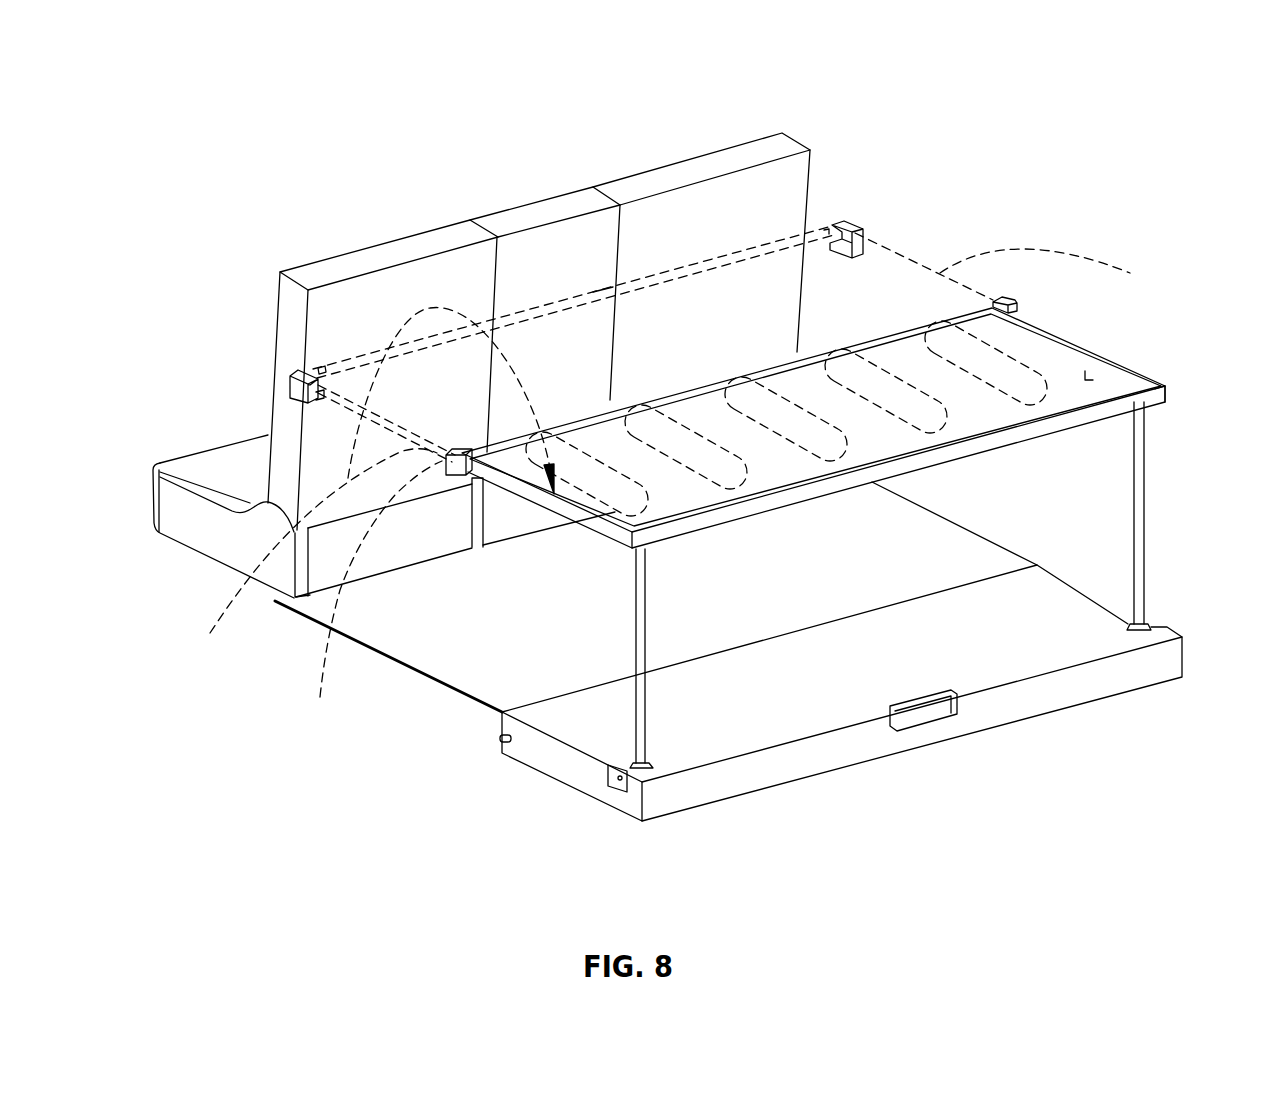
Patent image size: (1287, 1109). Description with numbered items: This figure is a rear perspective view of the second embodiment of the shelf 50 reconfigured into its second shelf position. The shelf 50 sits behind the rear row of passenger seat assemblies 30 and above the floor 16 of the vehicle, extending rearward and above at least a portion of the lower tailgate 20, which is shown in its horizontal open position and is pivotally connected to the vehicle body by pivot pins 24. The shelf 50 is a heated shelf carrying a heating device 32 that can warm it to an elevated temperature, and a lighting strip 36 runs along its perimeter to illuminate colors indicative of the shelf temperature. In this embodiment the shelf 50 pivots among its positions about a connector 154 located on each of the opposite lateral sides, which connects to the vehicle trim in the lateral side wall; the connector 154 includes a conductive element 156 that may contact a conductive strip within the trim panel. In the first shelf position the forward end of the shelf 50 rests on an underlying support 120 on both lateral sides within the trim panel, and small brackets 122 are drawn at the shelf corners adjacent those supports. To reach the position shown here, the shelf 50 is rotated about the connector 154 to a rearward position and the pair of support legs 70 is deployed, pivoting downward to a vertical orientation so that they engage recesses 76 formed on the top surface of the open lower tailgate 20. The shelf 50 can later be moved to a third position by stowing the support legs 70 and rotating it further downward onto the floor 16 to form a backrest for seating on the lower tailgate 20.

The floor 16 is at (942, 540).
The lower tailgate 20 is at (1092, 620).
The pivot pins 24 is at (500, 740).
The rear row of passenger seat assemblies 30 is at (782, 150).
The heating device 32 is at (1085, 372).
The lighting strip 36 is at (1163, 384).
The shelf 50 is at (1072, 353).
The support legs 70 is at (1147, 500).
The recesses 76 is at (1148, 622).
The underlying support 120 is at (855, 228).
The platform bracket 122 is at (1009, 300).
The connector 154 is at (307, 559).
The conductive element 156 is at (369, 589).